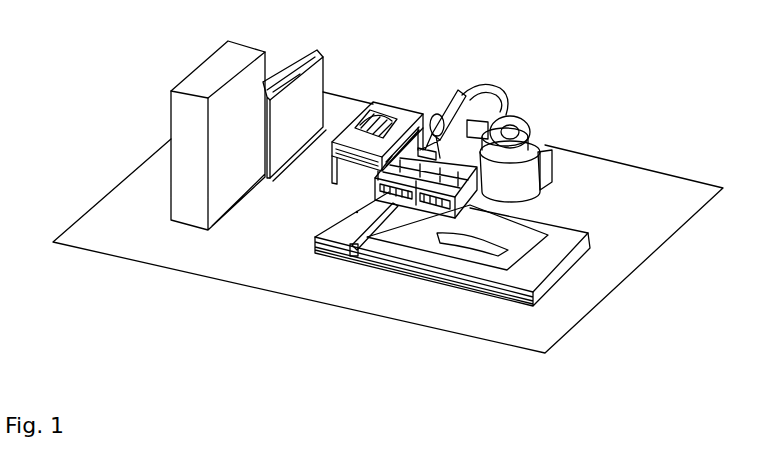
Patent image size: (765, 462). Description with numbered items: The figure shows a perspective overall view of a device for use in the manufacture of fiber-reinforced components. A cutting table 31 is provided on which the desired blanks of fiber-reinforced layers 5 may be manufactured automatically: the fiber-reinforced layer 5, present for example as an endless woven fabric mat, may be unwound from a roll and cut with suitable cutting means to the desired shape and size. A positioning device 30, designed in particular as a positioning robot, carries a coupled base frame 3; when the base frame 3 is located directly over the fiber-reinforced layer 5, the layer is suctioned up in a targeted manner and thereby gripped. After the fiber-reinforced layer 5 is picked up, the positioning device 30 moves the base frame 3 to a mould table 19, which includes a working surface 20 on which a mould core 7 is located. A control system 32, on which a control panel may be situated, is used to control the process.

The base frame 3 is at (375, 190).
The fiber-reinforced layer 5 is at (485, 243).
The mould core 7 is at (378, 105).
The mould table 19 is at (397, 100).
The working surface 20 is at (332, 143).
The positioning device 30 is at (510, 97).
The cutting table 31 is at (578, 273).
The control system 32 is at (150, 128).